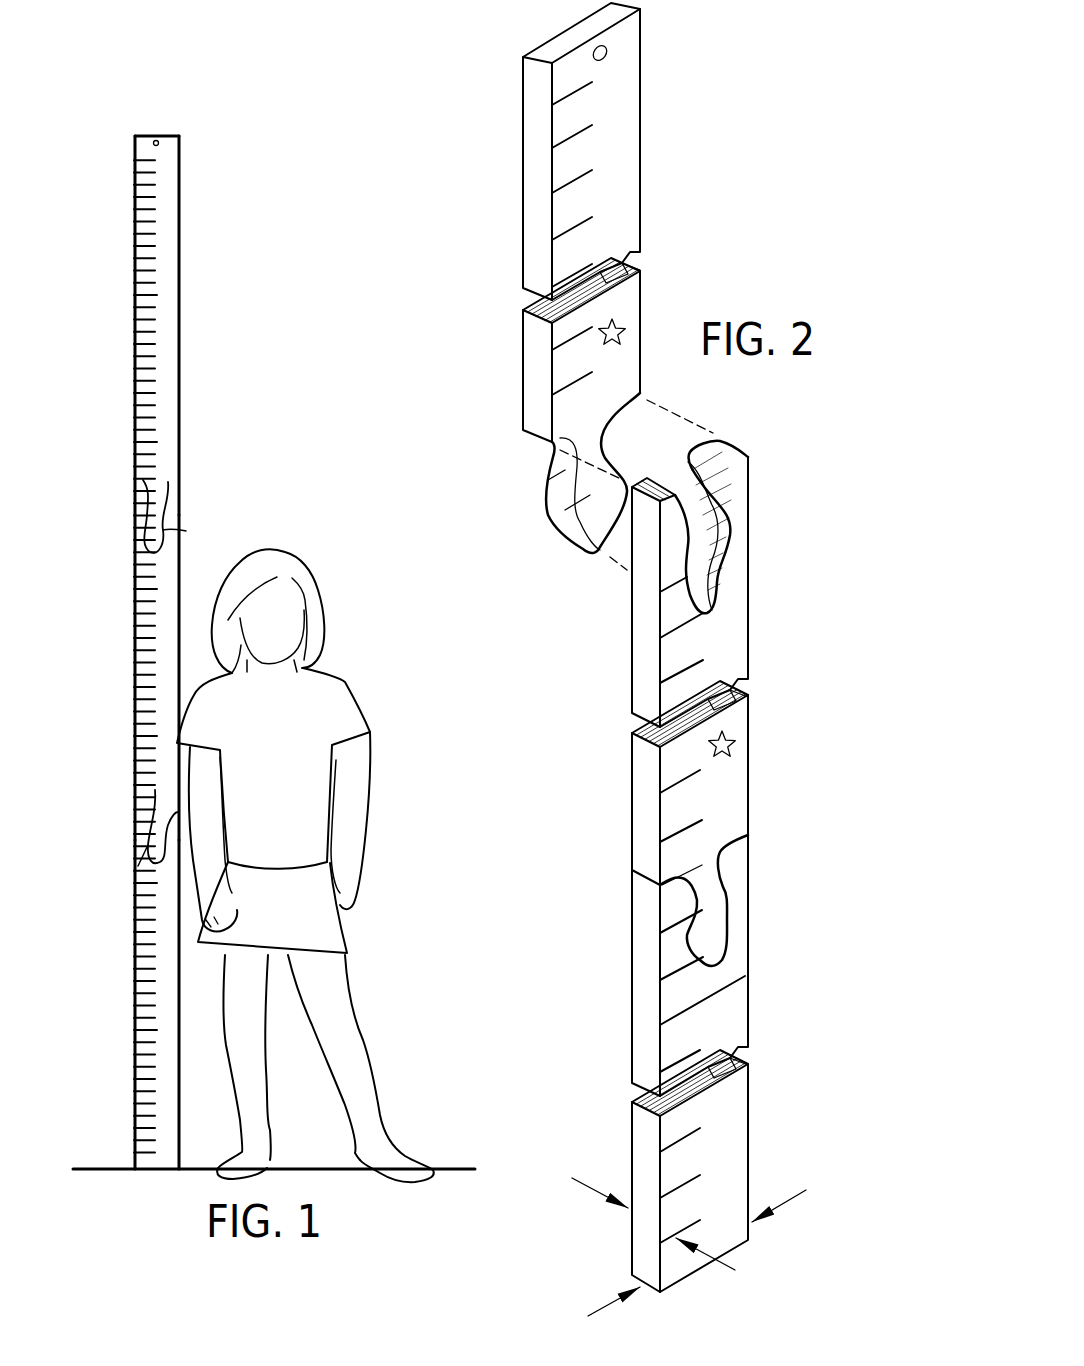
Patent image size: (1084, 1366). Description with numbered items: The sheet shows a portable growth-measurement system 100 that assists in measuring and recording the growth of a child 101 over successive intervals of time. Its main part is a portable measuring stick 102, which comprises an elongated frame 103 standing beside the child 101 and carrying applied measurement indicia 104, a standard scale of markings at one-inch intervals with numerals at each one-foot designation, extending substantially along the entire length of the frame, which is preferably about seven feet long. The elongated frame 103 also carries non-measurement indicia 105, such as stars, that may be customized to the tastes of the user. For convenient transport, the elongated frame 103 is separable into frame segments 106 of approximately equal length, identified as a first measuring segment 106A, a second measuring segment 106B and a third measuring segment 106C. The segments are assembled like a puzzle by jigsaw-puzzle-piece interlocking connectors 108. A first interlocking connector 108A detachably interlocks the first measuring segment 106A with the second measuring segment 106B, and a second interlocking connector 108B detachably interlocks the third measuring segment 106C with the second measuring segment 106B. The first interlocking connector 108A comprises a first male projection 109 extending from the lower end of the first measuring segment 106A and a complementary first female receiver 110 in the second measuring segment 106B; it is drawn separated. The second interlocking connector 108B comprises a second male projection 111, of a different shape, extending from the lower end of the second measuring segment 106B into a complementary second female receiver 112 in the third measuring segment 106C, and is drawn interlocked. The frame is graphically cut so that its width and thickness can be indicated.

In FIG. 1, the portable growth-measurement system 100 is at (204, 86).
In FIG. 1, the child 101 is at (300, 565).
In FIG. 1, the portable measuring stick 102 is at (268, 116).
In FIG. 2, the portable measuring stick 102 is at (697, 104).
In FIG. 1, the elongated frame 103 is at (108, 229).
In FIG. 1, the measurement indicia 104 is at (160, 273).
In FIG. 2, the measurement indicia 104 is at (585, 180).
In FIG. 2, the non-measurement indicia 105 is at (614, 330).
In FIG. 1, the frame segments 106 is at (175, 652).
In FIG. 2, the frame segments 106 is at (636, 647).
In FIG. 1, the first measuring segment 106A is at (222, 325).
In FIG. 2, the first measuring segment 106A is at (490, 290).
In FIG. 1, the second measuring segment 106B is at (120, 645).
In FIG. 2, the second measuring segment 106B is at (860, 620).
In FIG. 1, the third measuring segment 106C is at (120, 957).
In FIG. 2, the third measuring segment 106C is at (608, 988).
In FIG. 1, the interlocking connectors 108 is at (172, 692).
In FIG. 2, the interlocking connectors 108 is at (680, 678).
In FIG. 1, the first interlocking connector 108A is at (146, 518).
In FIG. 2, the first interlocking connector 108A is at (642, 502).
In FIG. 1, the second interlocking connector 108B is at (116, 826).
In FIG. 2, the second interlocking connector 108B is at (681, 900).
In FIG. 1, the first male projection 109 is at (143, 540).
In FIG. 2, the first male projection 109 is at (545, 500).
In FIG. 1, the first female receiver 110 is at (186, 531).
In FIG. 2, the first female receiver 110 is at (722, 540).
In FIG. 1, the second male projection 111 is at (155, 790).
In FIG. 2, the second male projection 111 is at (730, 893).
In FIG. 1, the second female receiver 112 is at (138, 867).
In FIG. 2, the second female receiver 112 is at (648, 948).